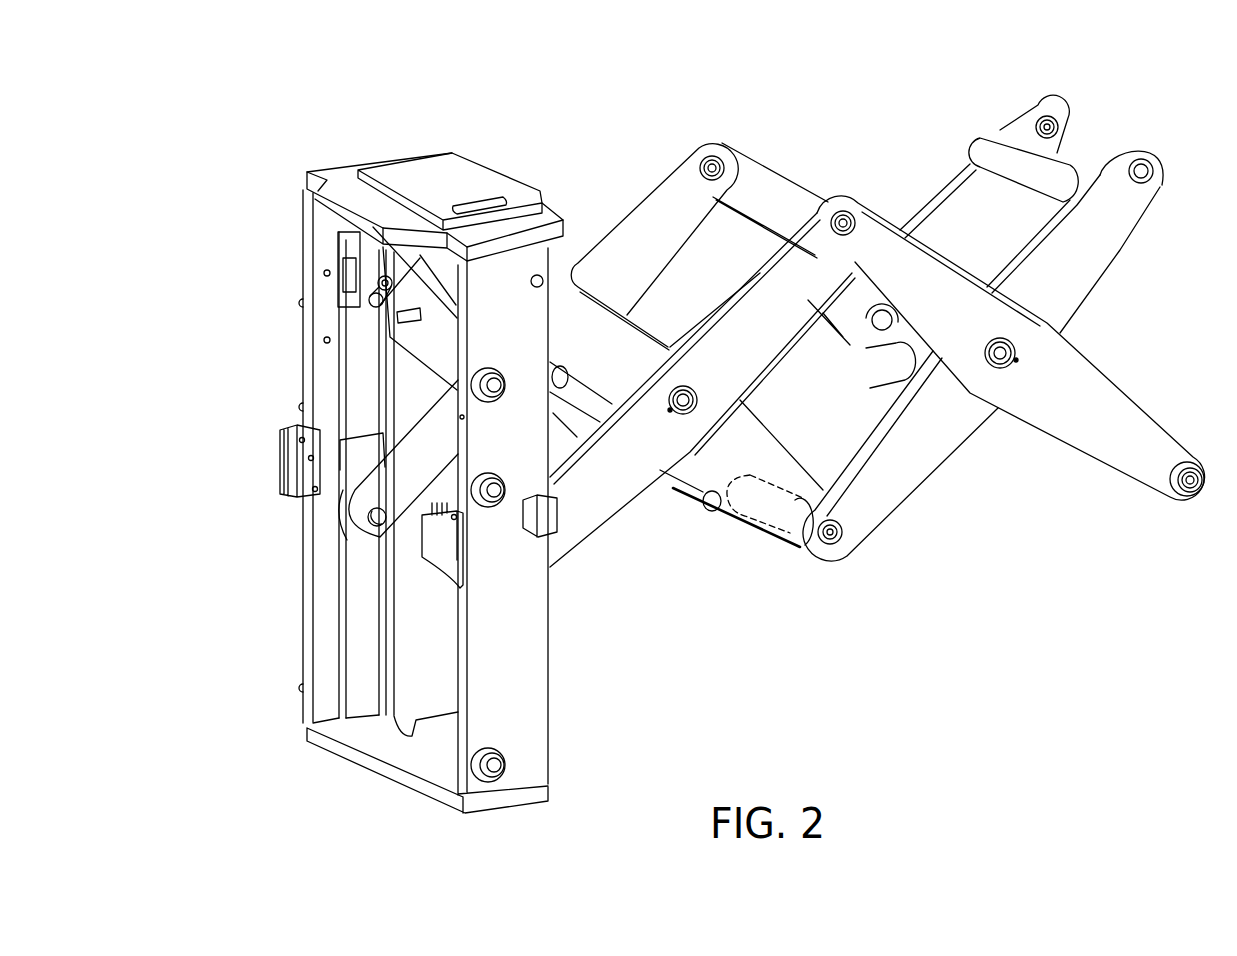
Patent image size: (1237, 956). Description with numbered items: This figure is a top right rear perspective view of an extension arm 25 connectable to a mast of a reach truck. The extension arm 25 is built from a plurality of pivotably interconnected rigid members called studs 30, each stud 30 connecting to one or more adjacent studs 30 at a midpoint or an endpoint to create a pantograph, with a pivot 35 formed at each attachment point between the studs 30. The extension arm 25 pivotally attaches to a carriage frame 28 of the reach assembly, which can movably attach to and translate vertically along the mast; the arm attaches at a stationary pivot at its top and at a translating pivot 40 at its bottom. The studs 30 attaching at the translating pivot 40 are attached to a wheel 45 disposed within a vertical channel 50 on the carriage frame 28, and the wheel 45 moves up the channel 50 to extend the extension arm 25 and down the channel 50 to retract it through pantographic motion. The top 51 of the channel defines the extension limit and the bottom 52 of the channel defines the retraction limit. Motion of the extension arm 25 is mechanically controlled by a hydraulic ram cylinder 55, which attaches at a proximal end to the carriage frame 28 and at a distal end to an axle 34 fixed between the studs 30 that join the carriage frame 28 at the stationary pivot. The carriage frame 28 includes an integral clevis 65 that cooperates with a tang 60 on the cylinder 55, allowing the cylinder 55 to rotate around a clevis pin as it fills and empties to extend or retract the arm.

The extension arm 25 is at (575, 148).
The carriage frame 28 is at (549, 662).
The stud 30 is at (621, 205).
The axle 34 is at (773, 507).
The pivot 35 is at (716, 160).
The translating pivot 40 is at (378, 527).
The wheel 45 is at (358, 488).
The vertical channel 50 is at (357, 652).
The top of the channel 51 is at (357, 437).
The bottom of the channel 52 is at (353, 738).
The hydraulic ram cylinder 55 is at (380, 308).
The tang 60 is at (347, 295).
The clevis 65 is at (347, 247).